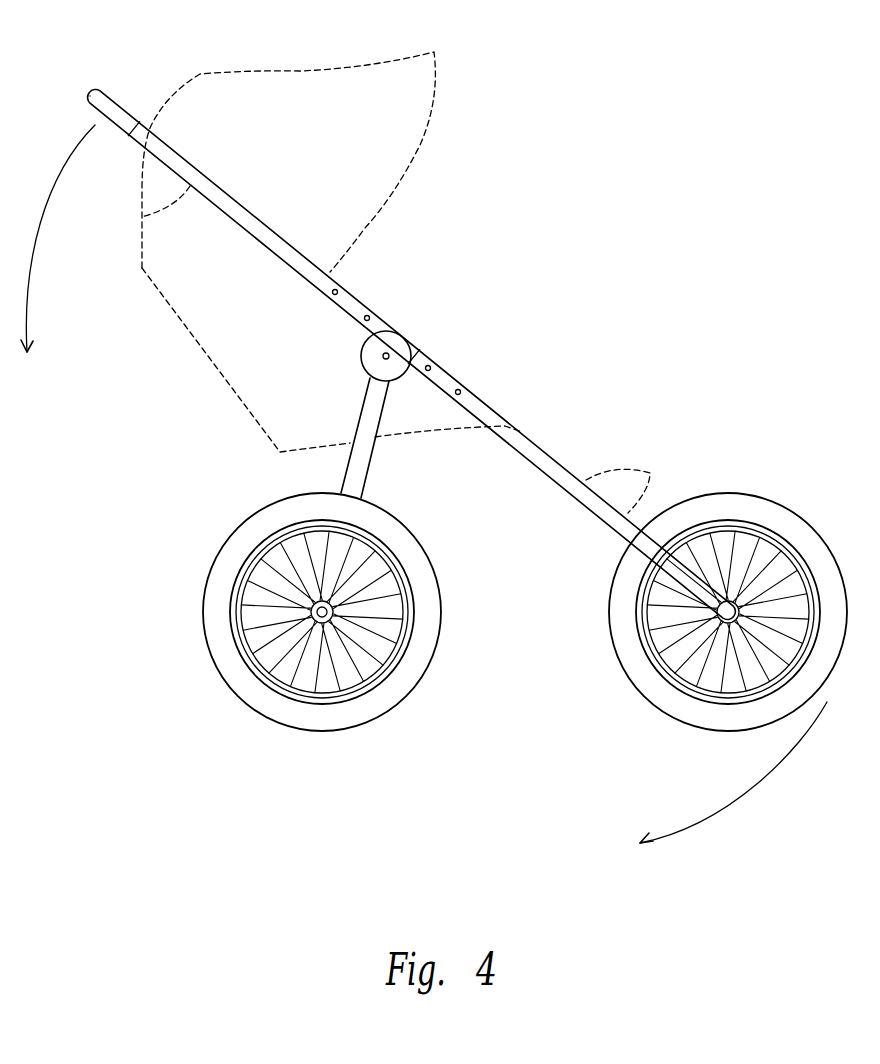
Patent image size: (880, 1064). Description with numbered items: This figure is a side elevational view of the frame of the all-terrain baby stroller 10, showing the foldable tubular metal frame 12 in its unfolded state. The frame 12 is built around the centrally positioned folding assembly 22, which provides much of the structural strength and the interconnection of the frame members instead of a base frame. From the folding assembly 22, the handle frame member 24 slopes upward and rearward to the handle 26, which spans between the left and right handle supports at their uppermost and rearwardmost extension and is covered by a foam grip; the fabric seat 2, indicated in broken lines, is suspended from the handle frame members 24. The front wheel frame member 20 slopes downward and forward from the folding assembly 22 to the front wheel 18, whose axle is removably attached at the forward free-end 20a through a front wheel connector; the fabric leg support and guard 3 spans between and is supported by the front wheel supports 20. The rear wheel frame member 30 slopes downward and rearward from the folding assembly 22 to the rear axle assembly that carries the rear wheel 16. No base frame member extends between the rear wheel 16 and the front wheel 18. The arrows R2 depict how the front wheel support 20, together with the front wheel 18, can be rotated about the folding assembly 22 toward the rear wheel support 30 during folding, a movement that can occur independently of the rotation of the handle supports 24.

The all-terrain baby stroller 10 is at (650, 151).
The frame 12 is at (141, 217).
The handle 26 is at (103, 88).
The handle frame member 24 is at (137, 146).
The fabric seat 2 is at (249, 362).
The folding assembly 22 is at (402, 337).
The rear wheel frame member 30 is at (368, 472).
The rear wheel 16 is at (245, 518).
The front wheel 18 is at (731, 492).
The front wheel frame member 20 is at (565, 487).
The forward free-end 20a is at (634, 634).
The fabric leg support and guard 3 is at (552, 458).
The arrow R2 is at (25, 305).